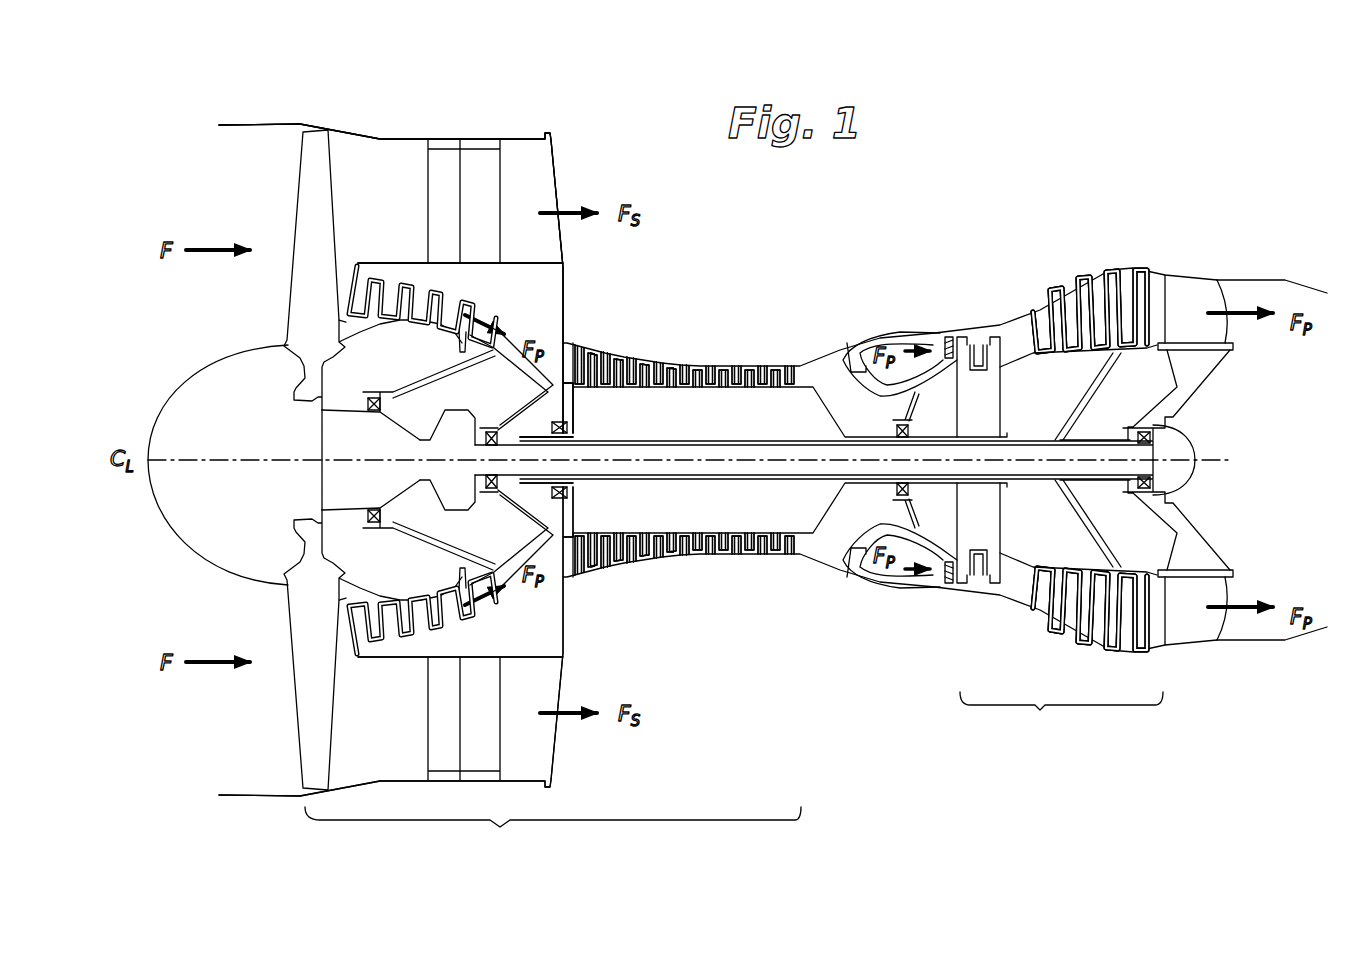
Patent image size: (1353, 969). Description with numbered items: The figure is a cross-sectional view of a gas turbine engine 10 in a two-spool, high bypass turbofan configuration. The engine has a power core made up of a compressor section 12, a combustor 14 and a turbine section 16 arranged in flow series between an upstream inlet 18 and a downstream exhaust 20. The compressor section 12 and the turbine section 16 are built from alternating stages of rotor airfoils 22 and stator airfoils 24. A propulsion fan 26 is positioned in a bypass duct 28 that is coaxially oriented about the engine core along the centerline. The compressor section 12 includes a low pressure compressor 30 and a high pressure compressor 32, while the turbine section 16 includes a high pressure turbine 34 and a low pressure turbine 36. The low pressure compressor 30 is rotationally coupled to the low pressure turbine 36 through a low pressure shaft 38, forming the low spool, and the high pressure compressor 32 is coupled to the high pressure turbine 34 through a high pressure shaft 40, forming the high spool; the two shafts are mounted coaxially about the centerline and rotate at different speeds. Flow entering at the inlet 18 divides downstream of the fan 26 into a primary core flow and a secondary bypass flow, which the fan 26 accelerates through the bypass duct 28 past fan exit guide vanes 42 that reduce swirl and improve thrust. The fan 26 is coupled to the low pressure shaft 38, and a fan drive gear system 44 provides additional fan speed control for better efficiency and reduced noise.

The gas turbine engine 10 is at (182, 100).
The compressor section 12 is at (510, 490).
The combustor 14 is at (855, 340).
The turbine section 16 is at (1096, 510).
The upstream inlet 18 is at (218, 451).
The downstream exhaust 20 is at (1272, 460).
The rotor airfoils 22 is at (617, 360).
The stator airfoils 24 is at (653, 365).
The propulsion fan 26 is at (312, 208).
The bypass duct 28 is at (396, 280).
The low pressure compressor 30 is at (525, 615).
The high pressure compressor 32 is at (700, 575).
The high pressure turbine 34 is at (983, 598).
The low pressure turbine 36 is at (1058, 637).
The low pressure shaft 38 is at (730, 472).
The high pressure shaft 40 is at (804, 495).
The fan exit guide vanes 42 is at (440, 158).
The fan drive gear system 44 is at (462, 405).